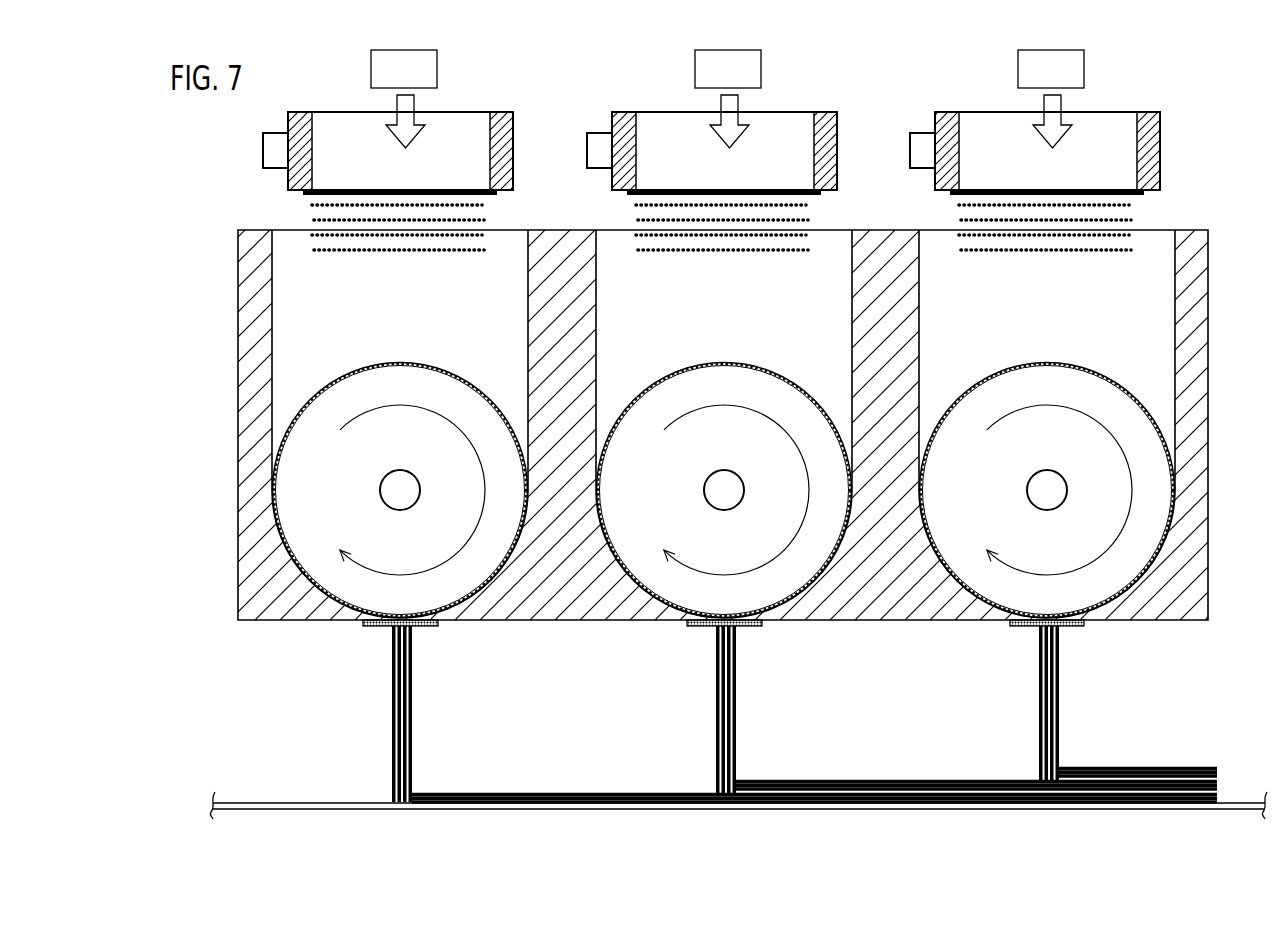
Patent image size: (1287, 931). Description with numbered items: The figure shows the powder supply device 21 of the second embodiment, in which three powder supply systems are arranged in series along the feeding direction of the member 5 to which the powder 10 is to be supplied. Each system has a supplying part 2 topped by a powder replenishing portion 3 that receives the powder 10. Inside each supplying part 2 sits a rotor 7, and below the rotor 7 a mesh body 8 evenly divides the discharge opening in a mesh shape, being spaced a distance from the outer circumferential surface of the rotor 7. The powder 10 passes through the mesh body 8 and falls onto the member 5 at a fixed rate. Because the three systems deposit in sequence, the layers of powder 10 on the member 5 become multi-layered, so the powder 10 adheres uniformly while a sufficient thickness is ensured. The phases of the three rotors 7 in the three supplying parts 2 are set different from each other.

The supplying part 2 is at (1233, 275).
The powder replenishing portion 3 is at (249, 151).
The member to which the powder is to be supplied 5 is at (317, 801).
The rotor 7 is at (404, 350).
The mesh body 8 is at (363, 623).
The powder 10 is at (437, 68).
The powder supply device 21 is at (211, 659).